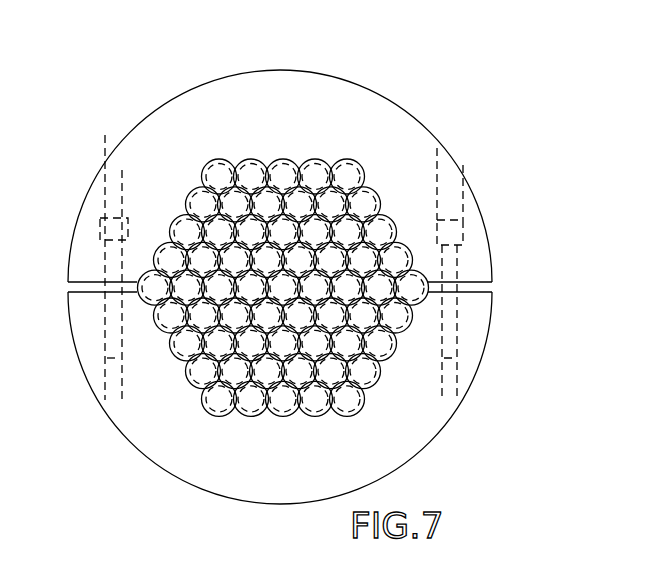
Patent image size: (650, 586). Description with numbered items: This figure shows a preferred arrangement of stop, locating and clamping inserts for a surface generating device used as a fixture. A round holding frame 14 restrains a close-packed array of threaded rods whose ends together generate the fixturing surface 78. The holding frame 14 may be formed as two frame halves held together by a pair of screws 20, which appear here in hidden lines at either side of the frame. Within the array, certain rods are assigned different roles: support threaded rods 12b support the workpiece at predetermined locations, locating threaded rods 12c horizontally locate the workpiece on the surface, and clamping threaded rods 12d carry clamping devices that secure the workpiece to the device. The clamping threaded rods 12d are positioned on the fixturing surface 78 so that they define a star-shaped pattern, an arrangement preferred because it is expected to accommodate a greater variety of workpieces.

The holding frame 14 is at (175, 122).
The fixturing surface 78 is at (352, 137).
The screws 20 is at (98, 227).
The clamping threaded rods 12d is at (337, 160).
The support threaded rods 12b is at (159, 327).
The locating threaded rods 12c is at (407, 325).